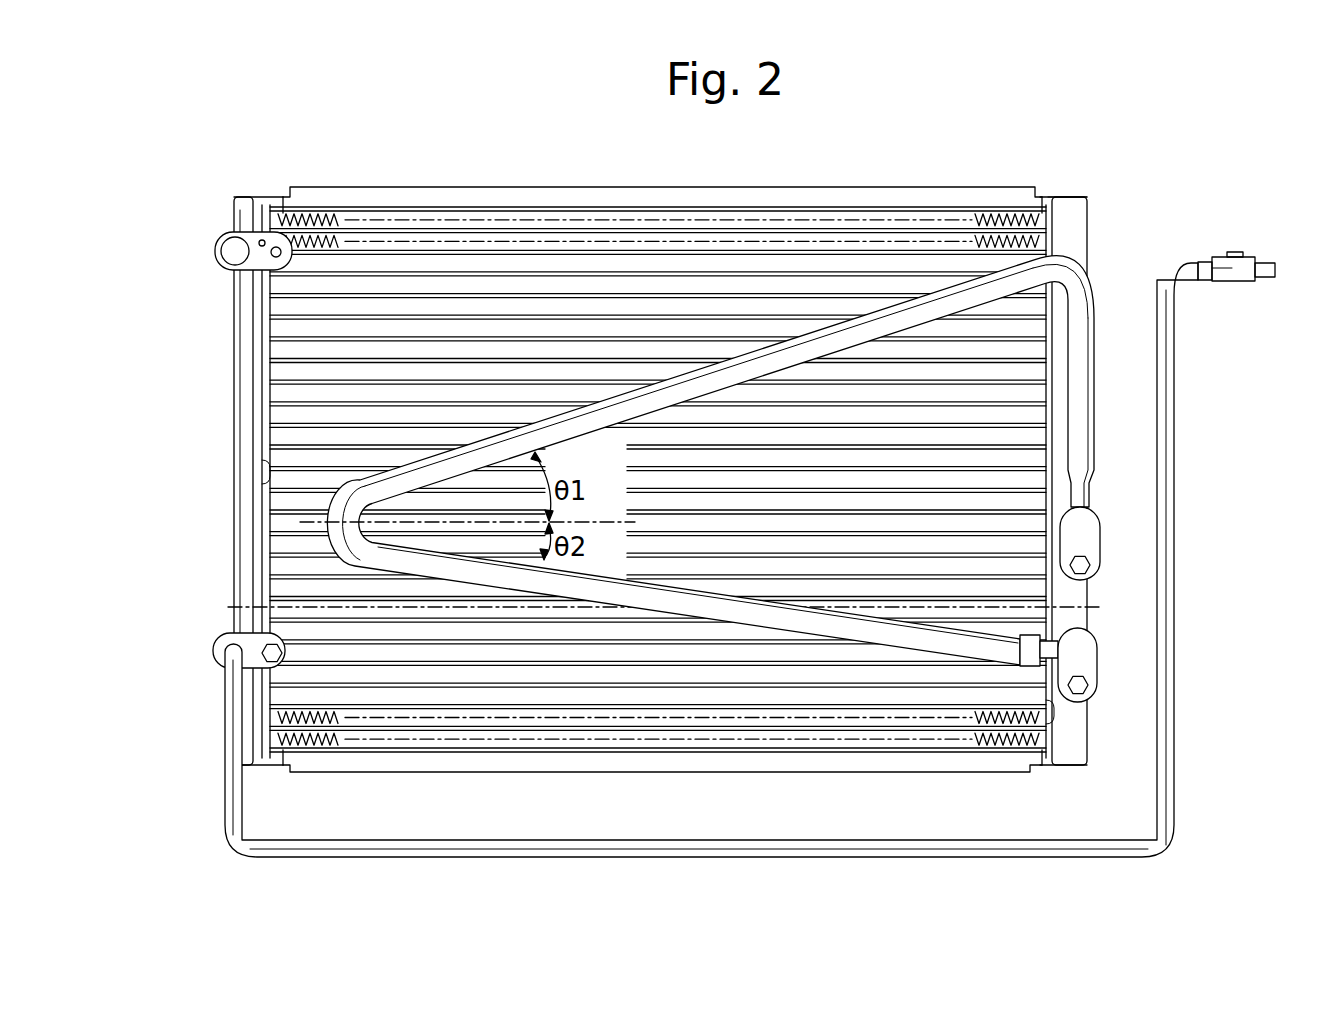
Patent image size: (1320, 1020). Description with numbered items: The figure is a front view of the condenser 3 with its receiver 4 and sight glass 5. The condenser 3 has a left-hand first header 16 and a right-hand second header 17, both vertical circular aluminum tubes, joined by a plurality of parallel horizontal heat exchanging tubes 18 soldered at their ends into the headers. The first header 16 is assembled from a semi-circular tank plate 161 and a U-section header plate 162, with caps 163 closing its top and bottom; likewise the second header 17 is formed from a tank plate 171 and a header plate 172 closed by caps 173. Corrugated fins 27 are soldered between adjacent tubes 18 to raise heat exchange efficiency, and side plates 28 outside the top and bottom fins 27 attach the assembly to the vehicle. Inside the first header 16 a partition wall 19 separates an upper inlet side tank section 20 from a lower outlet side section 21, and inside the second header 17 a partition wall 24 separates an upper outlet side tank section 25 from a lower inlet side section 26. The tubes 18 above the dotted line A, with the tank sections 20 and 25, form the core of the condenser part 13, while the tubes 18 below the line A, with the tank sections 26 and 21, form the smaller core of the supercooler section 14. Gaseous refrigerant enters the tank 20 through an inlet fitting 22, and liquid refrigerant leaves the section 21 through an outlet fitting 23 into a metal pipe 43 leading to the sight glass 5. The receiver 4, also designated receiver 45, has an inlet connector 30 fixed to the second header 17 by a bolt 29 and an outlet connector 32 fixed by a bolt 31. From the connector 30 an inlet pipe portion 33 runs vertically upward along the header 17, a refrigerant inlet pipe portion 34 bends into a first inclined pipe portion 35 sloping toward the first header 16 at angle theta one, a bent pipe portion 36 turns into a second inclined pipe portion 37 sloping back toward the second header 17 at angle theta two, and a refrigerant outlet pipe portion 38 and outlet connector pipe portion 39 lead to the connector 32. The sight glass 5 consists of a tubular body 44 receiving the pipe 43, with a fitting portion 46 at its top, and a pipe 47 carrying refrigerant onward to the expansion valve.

The condenser 3 is at (1048, 168).
The receiver 4 is at (1104, 251).
The sight glass 5 is at (1270, 240).
The condenser part 13 is at (266, 415).
The supercooler section 14 is at (302, 674).
The first header 16 is at (258, 792).
The second header 17 is at (1092, 784).
The heat exchanging tubes 18 is at (790, 222).
The partition wall 19 is at (236, 605).
The inlet side tank section 20 is at (262, 472).
The outlet side section 21 is at (262, 735).
The inlet fitting 22 is at (216, 242).
The outlet fitting 23 is at (214, 647).
The partition wall 24 is at (1068, 607).
The outlet side tank section 25 is at (1062, 375).
The inlet side section 26 is at (1052, 718).
The corrugated fins 27 is at (316, 210).
The side plates 28 is at (426, 188).
The bolt 29 is at (1090, 567).
The inlet connector 30 is at (1092, 526).
The bolt 31 is at (1090, 688).
The outlet connector 32 is at (1095, 655).
The inlet pipe portion 33 is at (1080, 432).
The refrigerant inlet pipe portion 34 is at (1082, 286).
The first inclined pipe portion 35 is at (944, 290).
The bent pipe portion 36 is at (330, 502).
The second inclined pipe portion 37 is at (825, 620).
The refrigerant outlet pipe portion 38 is at (965, 652).
The outlet connector pipe portion 39 is at (1060, 650).
The pipe 43 is at (1168, 730).
The tubular body 44 is at (1225, 283).
The receiver 45 is at (1216, 262).
The fitting projection 46 is at (1236, 252).
The pipe 47 is at (1267, 280).
The tank plate 161 is at (238, 306).
The header plate 162 is at (263, 370).
The caps 163 is at (262, 197).
The tank plate 171 is at (1082, 215).
The header plate 172 is at (1050, 458).
The caps 173 is at (1062, 770).
The dotted line A is at (538, 602).